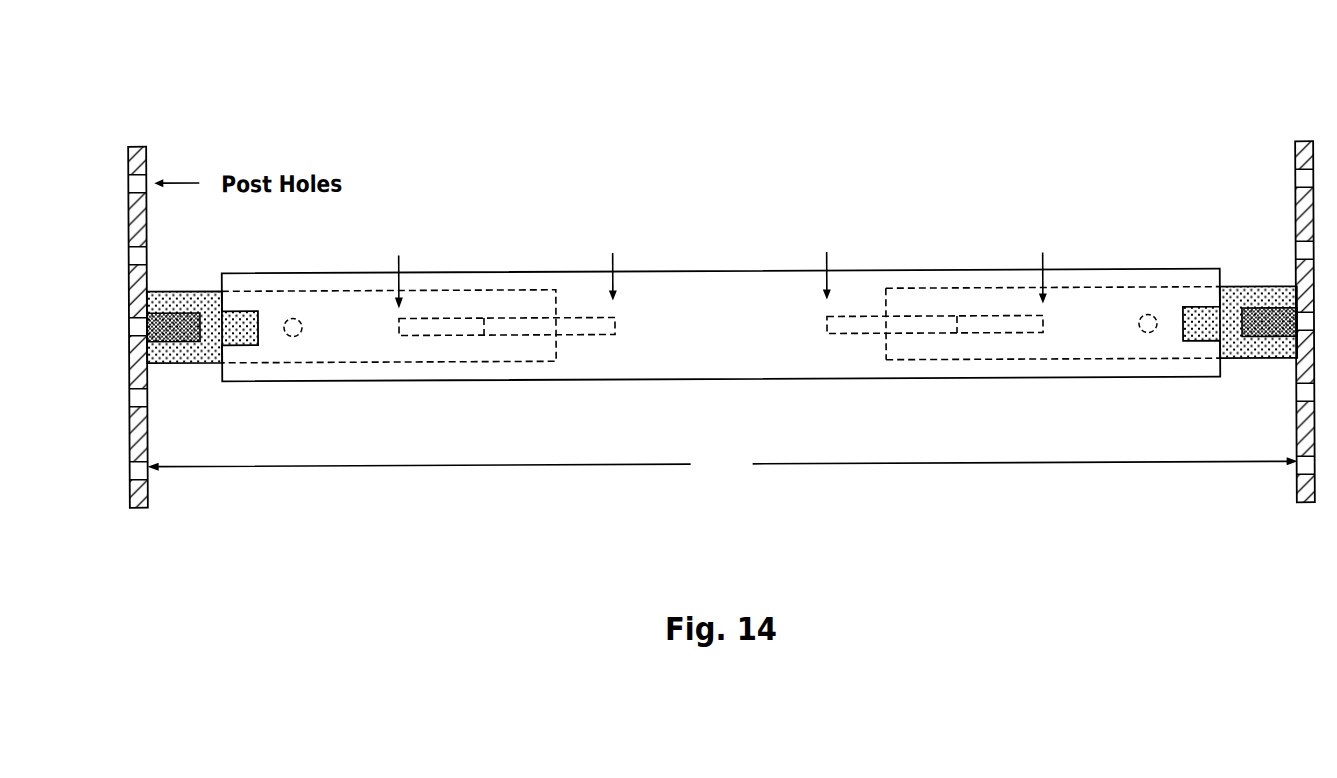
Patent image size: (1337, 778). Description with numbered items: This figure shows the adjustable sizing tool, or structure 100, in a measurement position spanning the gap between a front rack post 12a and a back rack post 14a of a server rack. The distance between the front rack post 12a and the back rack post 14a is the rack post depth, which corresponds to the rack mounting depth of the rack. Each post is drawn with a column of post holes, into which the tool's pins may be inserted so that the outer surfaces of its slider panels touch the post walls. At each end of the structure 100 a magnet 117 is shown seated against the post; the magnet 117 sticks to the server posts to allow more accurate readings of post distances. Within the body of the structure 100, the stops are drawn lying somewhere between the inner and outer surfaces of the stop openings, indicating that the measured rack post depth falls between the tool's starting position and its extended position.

The structure 100 is at (722, 255).
The front rack post 12a is at (138, 523).
The back rack post 14a is at (1305, 525).
The magnet 117 is at (152, 345).